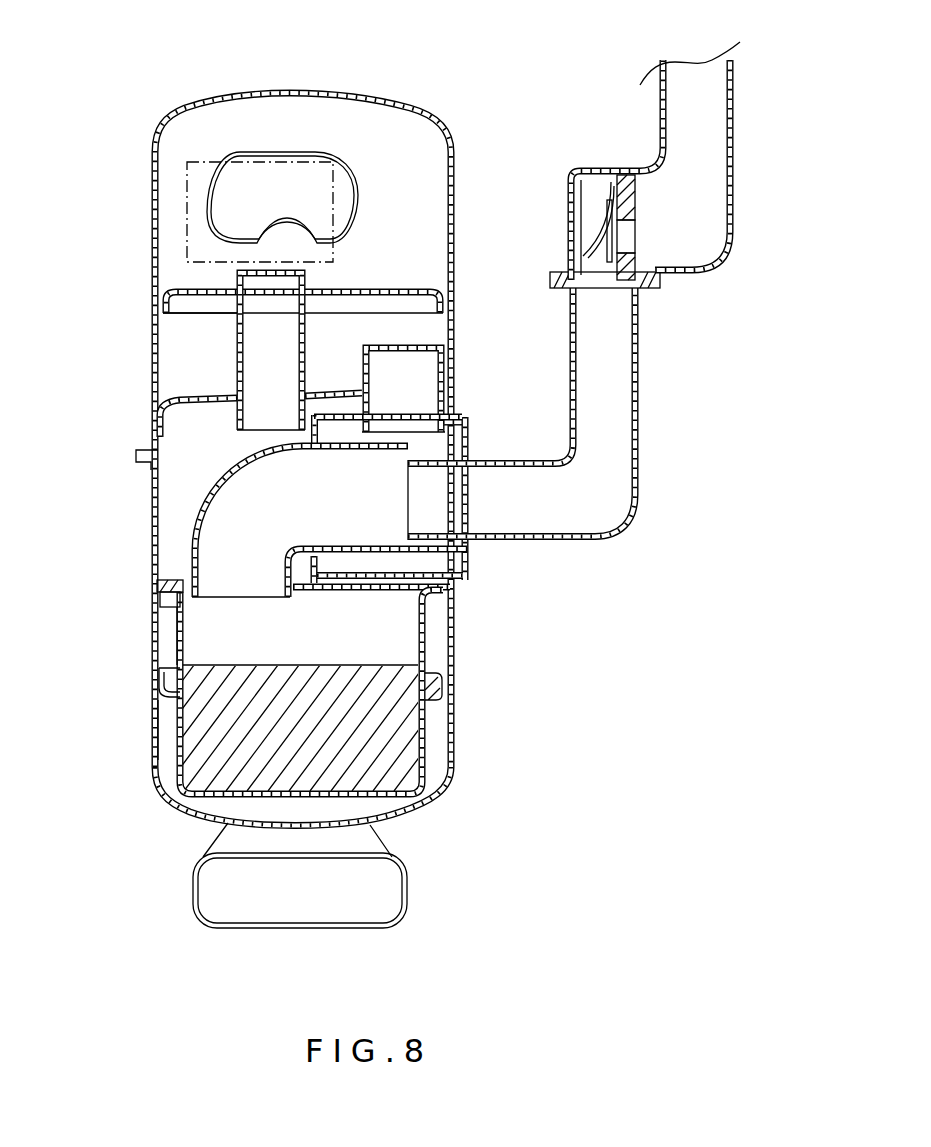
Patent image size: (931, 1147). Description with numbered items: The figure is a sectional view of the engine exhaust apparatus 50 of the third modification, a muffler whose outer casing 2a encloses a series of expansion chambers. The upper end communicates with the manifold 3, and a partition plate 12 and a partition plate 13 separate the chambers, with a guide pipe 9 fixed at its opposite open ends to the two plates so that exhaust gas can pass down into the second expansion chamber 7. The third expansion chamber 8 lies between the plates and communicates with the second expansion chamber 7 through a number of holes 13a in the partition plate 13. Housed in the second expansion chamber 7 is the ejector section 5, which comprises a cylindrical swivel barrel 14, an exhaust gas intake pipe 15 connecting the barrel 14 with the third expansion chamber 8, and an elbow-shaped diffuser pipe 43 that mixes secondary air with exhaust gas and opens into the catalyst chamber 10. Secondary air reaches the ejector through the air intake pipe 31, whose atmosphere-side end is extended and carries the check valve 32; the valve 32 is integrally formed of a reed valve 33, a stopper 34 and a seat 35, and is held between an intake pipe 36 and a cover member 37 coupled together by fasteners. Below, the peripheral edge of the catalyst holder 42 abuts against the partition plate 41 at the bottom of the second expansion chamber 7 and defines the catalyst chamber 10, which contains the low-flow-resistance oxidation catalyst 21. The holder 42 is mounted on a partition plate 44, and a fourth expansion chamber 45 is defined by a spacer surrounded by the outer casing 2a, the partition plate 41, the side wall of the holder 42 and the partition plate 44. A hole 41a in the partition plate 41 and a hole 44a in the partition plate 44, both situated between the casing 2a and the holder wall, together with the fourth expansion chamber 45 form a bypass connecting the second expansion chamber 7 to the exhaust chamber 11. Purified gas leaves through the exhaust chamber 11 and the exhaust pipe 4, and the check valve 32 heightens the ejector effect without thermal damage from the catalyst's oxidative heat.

The exhaust apparatus 50 is at (477, 95).
The outer casing 2a is at (152, 243).
The manifold 3 is at (355, 212).
The exhaust pipe 4 is at (392, 846).
The ejector section 5 is at (463, 419).
The second expansion chamber 7 is at (172, 480).
The third expansion chamber 8 is at (172, 326).
The guide pipe 9 is at (310, 292).
The catalyst chamber 10 is at (398, 634).
The exhaust chamber 11 is at (210, 808).
The partition plate 12 is at (412, 290).
The partition plate 13 is at (170, 402).
The holes 13a is at (213, 398).
The swivel barrel 14 is at (470, 447).
The exhaust gas intake pipe 15 is at (448, 364).
The catalyst 21 is at (405, 736).
The air intake pipe 31 is at (602, 540).
The check valve 32 is at (657, 120).
The reed valve 33 is at (598, 170).
The stopper 34 is at (580, 170).
The seat 35 is at (633, 170).
The intake pipe 36 is at (733, 182).
The cover member 37 is at (567, 215).
The partition plate 41 is at (322, 590).
The hole 41a is at (168, 583).
The catalyst holder 42 is at (432, 672).
The diffuser pipe 43 is at (185, 547).
The partition plate 44 is at (158, 700).
The hole 44a is at (160, 684).
The fourth expansion chamber 45 is at (163, 626).